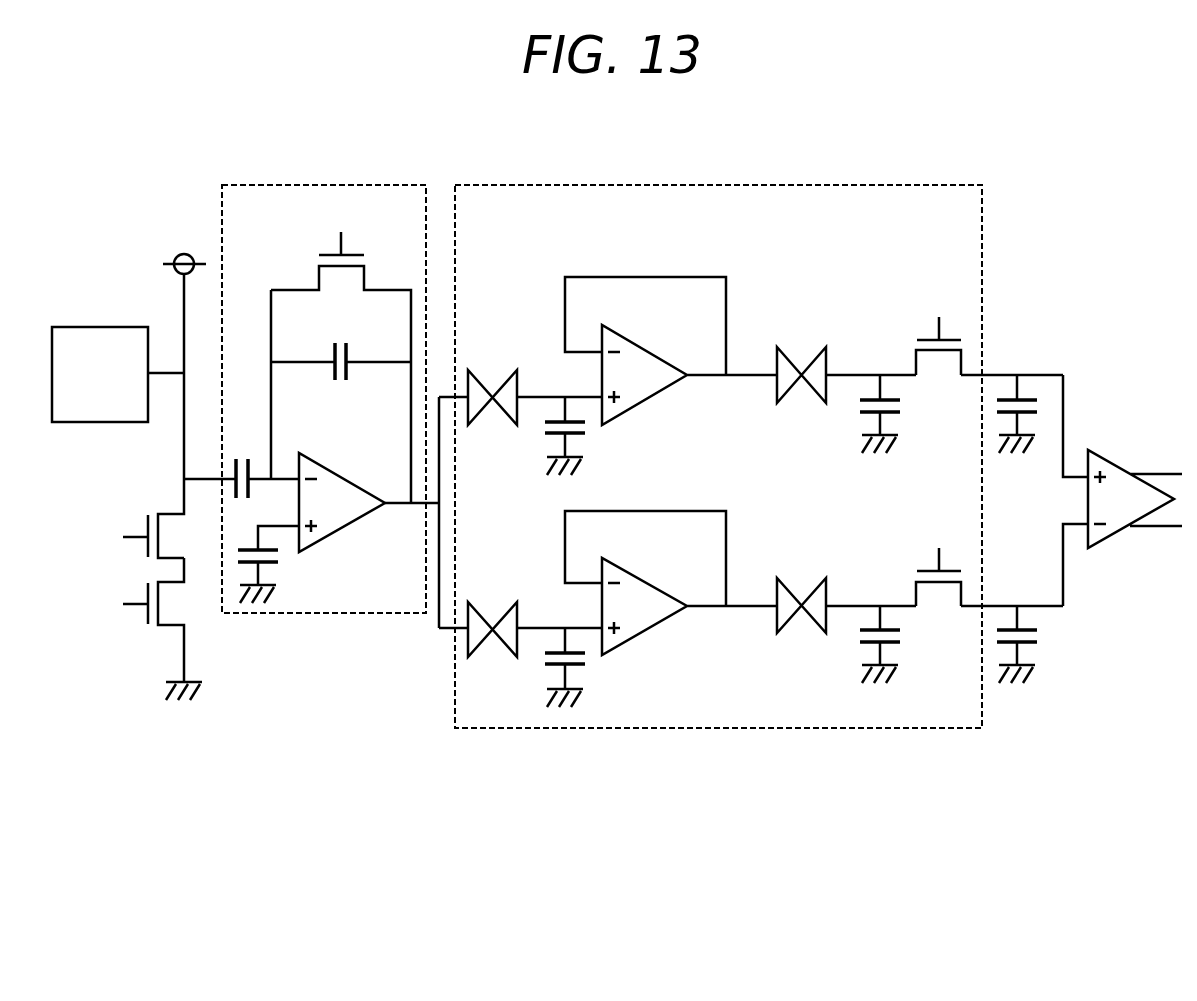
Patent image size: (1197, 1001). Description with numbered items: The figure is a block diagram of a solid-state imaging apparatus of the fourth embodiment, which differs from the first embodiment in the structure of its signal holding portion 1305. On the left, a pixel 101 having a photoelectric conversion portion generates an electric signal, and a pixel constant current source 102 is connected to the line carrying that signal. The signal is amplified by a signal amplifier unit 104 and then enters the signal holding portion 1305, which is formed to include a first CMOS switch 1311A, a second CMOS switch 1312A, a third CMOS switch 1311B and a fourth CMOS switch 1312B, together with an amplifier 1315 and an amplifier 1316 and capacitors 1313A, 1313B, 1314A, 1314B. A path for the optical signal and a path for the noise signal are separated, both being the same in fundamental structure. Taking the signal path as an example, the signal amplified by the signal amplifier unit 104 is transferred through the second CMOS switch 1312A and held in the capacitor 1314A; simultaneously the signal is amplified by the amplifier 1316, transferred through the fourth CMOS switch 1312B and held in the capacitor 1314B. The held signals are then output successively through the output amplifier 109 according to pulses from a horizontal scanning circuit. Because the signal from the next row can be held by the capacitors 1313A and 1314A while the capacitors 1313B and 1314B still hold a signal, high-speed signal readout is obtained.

The pixel 101 is at (100, 327).
The pixel constant current source 102 is at (132, 610).
The signal amplifier unit 104 is at (335, 185).
The output amplifier 109 is at (1108, 458).
The signal holding portion 1305 is at (765, 185).
The first CMOS switch 1311A is at (482, 607).
The third CMOS switch 1311B is at (790, 583).
The second CMOS switch 1312A is at (483, 375).
The fourth CMOS switch 1312B is at (793, 360).
The capacitor 1313A is at (590, 668).
The capacitor 1313B is at (856, 640).
The capacitor 1314A is at (590, 433).
The capacitor 1314B is at (850, 407).
The amplifier 1315 is at (702, 511).
The amplifier 1316 is at (653, 277).